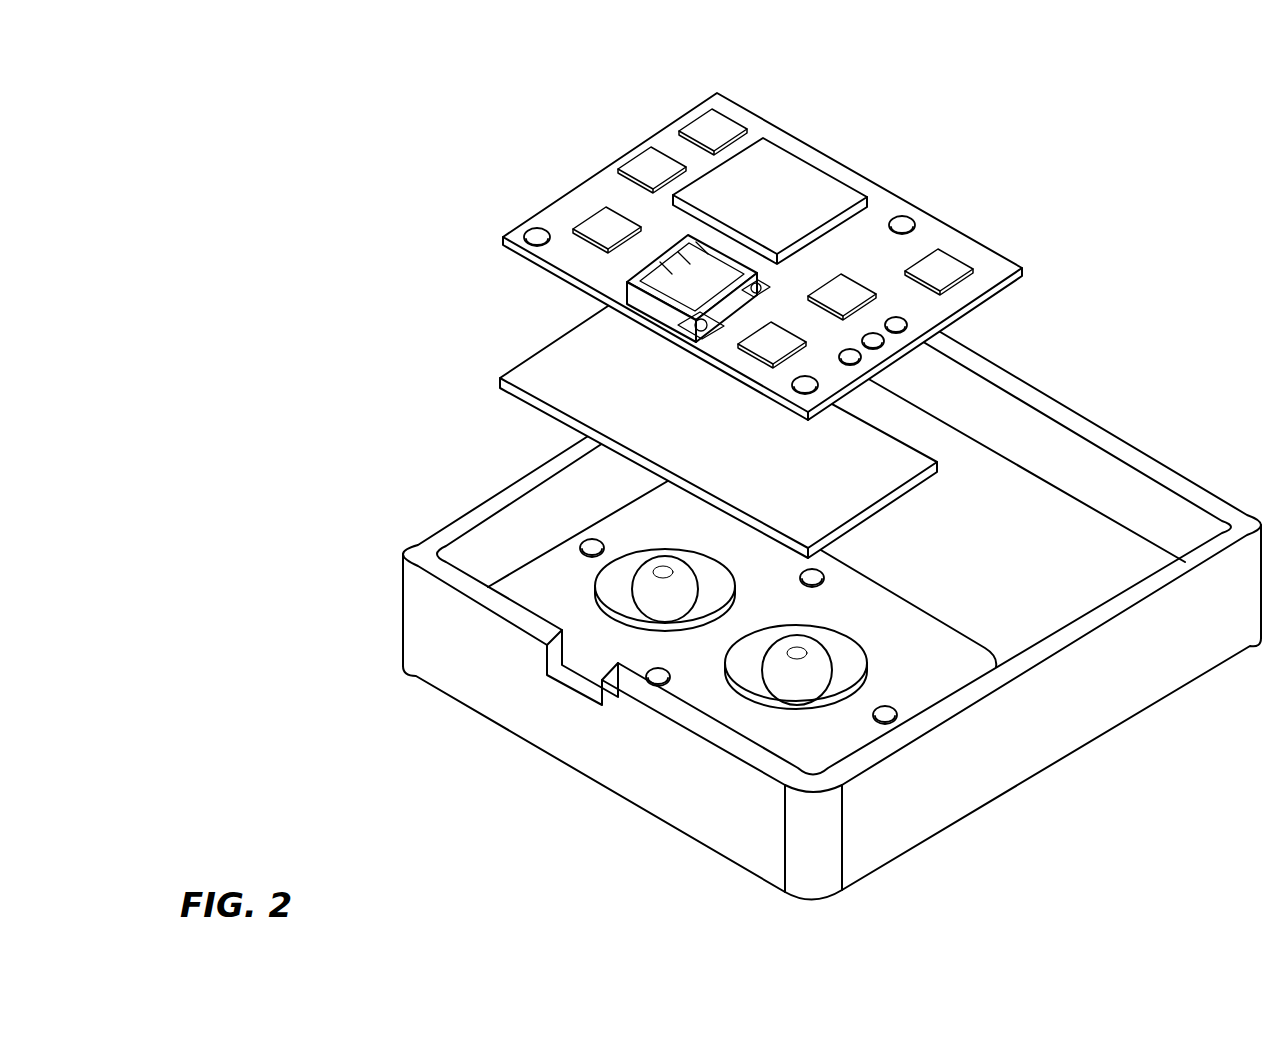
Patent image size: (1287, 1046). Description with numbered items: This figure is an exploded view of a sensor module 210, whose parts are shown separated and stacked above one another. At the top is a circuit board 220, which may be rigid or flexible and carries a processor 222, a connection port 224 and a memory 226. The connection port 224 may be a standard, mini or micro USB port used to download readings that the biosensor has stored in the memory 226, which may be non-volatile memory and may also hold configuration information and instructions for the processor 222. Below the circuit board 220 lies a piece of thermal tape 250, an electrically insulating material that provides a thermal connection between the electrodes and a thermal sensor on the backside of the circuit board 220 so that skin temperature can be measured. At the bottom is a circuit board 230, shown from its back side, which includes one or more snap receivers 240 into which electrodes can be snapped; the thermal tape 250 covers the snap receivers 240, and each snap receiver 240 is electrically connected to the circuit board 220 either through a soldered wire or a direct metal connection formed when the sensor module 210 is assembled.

The sensor module 210 is at (401, 662).
The circuit board 220 is at (890, 188).
The processor 222 is at (778, 147).
The connection port 224 is at (628, 266).
The memory 226 is at (965, 262).
The circuit board 230 is at (930, 676).
The snap receiver 240 is at (763, 683).
The thermal tape 250 is at (522, 362).